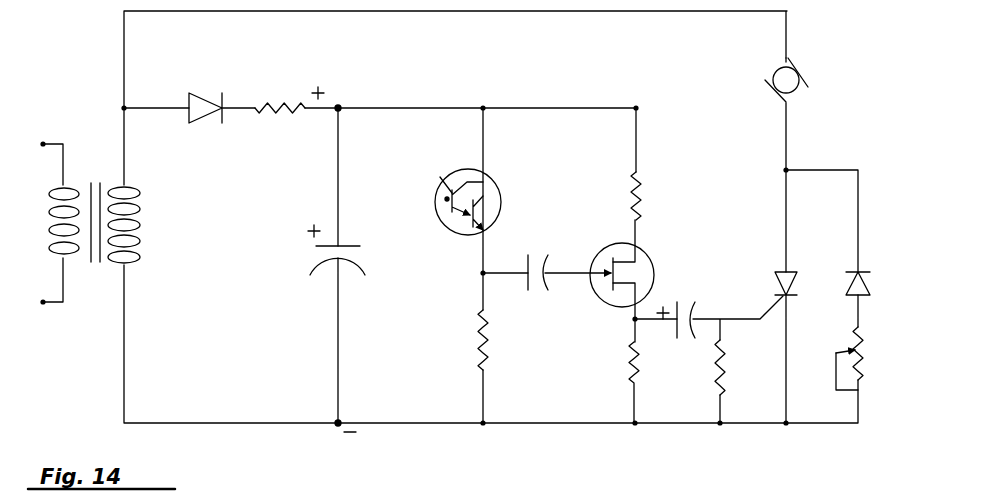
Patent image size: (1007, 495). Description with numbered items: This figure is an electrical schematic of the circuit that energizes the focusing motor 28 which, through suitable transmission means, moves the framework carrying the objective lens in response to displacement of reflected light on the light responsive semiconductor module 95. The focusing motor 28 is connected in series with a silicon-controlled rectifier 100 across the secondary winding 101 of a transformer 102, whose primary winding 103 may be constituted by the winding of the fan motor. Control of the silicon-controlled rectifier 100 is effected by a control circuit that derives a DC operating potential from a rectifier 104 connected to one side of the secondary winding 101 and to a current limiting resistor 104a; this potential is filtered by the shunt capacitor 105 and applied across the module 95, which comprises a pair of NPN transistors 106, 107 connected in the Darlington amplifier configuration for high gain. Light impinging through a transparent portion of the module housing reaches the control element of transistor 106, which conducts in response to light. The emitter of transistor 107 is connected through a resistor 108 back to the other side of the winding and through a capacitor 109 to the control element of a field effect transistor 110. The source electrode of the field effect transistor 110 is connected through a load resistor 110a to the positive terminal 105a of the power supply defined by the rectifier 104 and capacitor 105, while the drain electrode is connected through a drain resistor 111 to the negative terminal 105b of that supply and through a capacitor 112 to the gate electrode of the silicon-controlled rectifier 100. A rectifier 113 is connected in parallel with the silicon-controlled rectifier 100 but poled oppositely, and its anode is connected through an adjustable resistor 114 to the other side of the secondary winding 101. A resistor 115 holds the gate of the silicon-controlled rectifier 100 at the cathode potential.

The focusing motor 28 is at (774, 76).
The light responsive semiconductor module 95 is at (496, 180).
The silicon-controlled rectifier 100 is at (777, 272).
The secondary winding 101 is at (137, 196).
The transformer 102 is at (105, 160).
The primary winding 103 is at (52, 226).
The rectifier 104 is at (203, 92).
The current limiting resistor 104a is at (254, 110).
The shunt capacitor 105 is at (347, 245).
The positive terminal 105a is at (339, 110).
The negative terminal 105b is at (340, 421).
The NPN transistor 106 is at (441, 178).
The NPN transistor 107 is at (493, 209).
The resistor 108 is at (479, 330).
The capacitor 109 is at (545, 268).
The field effect transistor 110 is at (650, 250).
The load resistor 110a is at (638, 178).
The drain resistor 111 is at (629, 360).
The capacitor 112 is at (690, 306).
The rectifier 113 is at (846, 284).
The adjustable resistor 114 is at (838, 352).
The resistor 115 is at (717, 366).